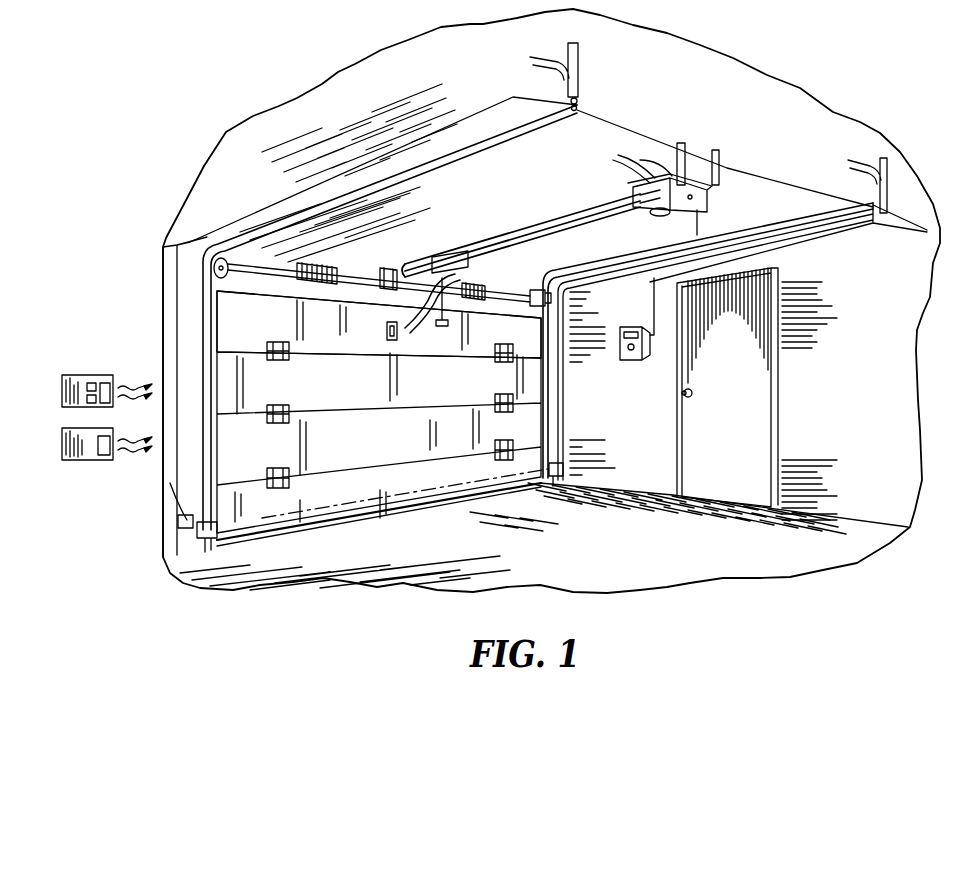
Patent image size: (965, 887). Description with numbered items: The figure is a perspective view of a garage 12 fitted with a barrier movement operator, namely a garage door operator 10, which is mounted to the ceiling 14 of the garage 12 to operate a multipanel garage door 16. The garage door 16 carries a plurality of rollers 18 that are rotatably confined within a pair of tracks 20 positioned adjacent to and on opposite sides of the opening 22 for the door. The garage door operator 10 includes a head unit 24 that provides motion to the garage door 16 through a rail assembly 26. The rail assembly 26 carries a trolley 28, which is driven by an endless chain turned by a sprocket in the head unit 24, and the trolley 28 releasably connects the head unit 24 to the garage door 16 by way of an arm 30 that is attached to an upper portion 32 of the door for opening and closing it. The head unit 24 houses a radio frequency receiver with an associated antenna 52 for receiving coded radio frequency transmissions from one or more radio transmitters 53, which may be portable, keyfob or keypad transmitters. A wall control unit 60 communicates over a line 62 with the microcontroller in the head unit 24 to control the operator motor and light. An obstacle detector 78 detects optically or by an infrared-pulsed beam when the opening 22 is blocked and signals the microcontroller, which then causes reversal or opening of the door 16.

The garage door operator 10 is at (570, 247).
The garage 12 is at (170, 268).
The ceiling 14 is at (778, 108).
The multipanel garage door 16 is at (379, 418).
The rollers 18 is at (550, 400).
The tracks 20 is at (200, 475).
The opening 22 is at (510, 477).
The head unit 24 is at (642, 213).
The rail assembly 26 is at (500, 237).
The trolley 28 is at (477, 263).
The arm 30 is at (425, 322).
The upper portion 32 is at (348, 342).
The antenna 52 is at (705, 226).
The radio transmitters 53 is at (84, 378).
The wall control unit 60 is at (647, 357).
The line 62 is at (655, 284).
The obstacle detector 78 is at (212, 534).